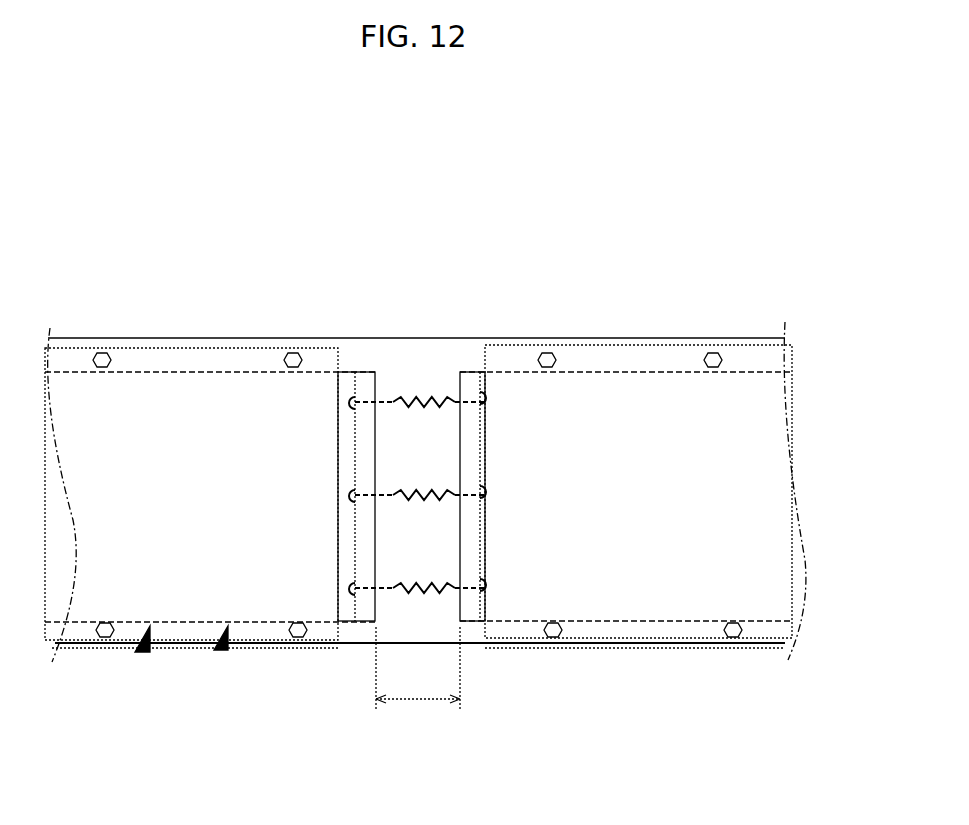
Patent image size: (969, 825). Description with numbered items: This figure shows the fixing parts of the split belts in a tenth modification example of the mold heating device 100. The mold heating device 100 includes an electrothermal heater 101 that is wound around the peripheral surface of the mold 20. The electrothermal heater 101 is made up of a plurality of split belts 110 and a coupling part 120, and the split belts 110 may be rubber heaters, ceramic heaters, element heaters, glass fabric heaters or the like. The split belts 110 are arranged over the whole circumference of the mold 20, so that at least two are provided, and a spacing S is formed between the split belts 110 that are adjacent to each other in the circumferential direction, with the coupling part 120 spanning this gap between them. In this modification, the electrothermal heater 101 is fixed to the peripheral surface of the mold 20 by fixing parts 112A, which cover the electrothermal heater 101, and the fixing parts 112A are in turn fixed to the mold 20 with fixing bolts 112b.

The mold 20 is at (545, 336).
The split belt 110 is at (147, 372).
The fixing part 112A is at (237, 360).
The fixing bolt 112b is at (102, 353).
The coupling part 120 is at (414, 400).
The mold heating device 100 is at (147, 656).
The electrothermal heater 101 is at (225, 655).
The spacing S is at (418, 668).